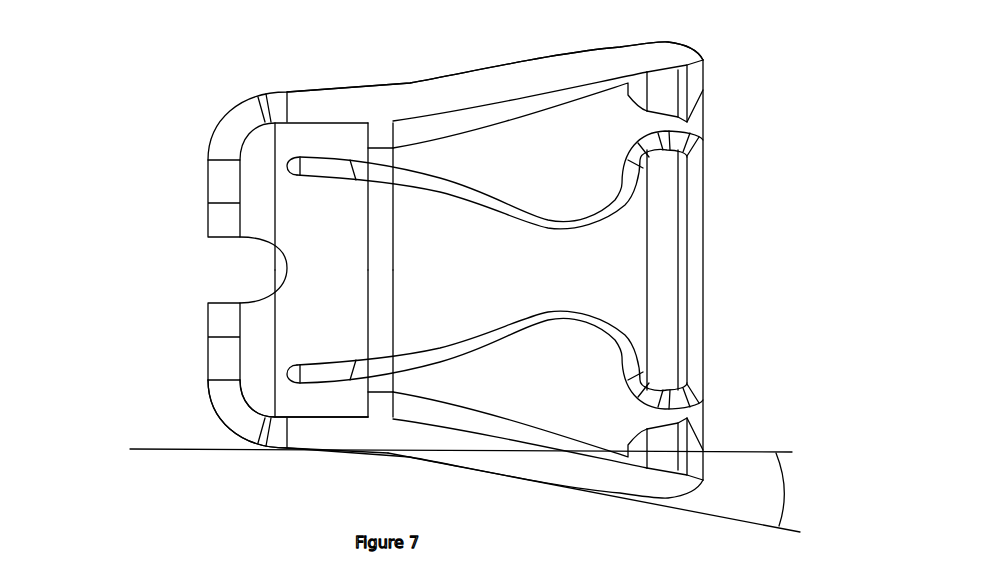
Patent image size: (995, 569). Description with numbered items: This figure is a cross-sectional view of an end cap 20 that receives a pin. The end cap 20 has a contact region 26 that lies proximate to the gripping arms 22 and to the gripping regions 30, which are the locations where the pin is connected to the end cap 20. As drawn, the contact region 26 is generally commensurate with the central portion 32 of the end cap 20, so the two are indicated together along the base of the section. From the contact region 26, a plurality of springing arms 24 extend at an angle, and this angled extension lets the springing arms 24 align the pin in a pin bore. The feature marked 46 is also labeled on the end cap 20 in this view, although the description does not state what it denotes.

The end cap 20 is at (151, 90).
The gripping arms 22 is at (215, 173).
The springing arms 24 is at (703, 90).
The contact region 26 is at (252, 453).
The gripping regions 30 is at (225, 257).
The central portion 32 is at (387, 453).
The top surface 46 is at (670, 42).